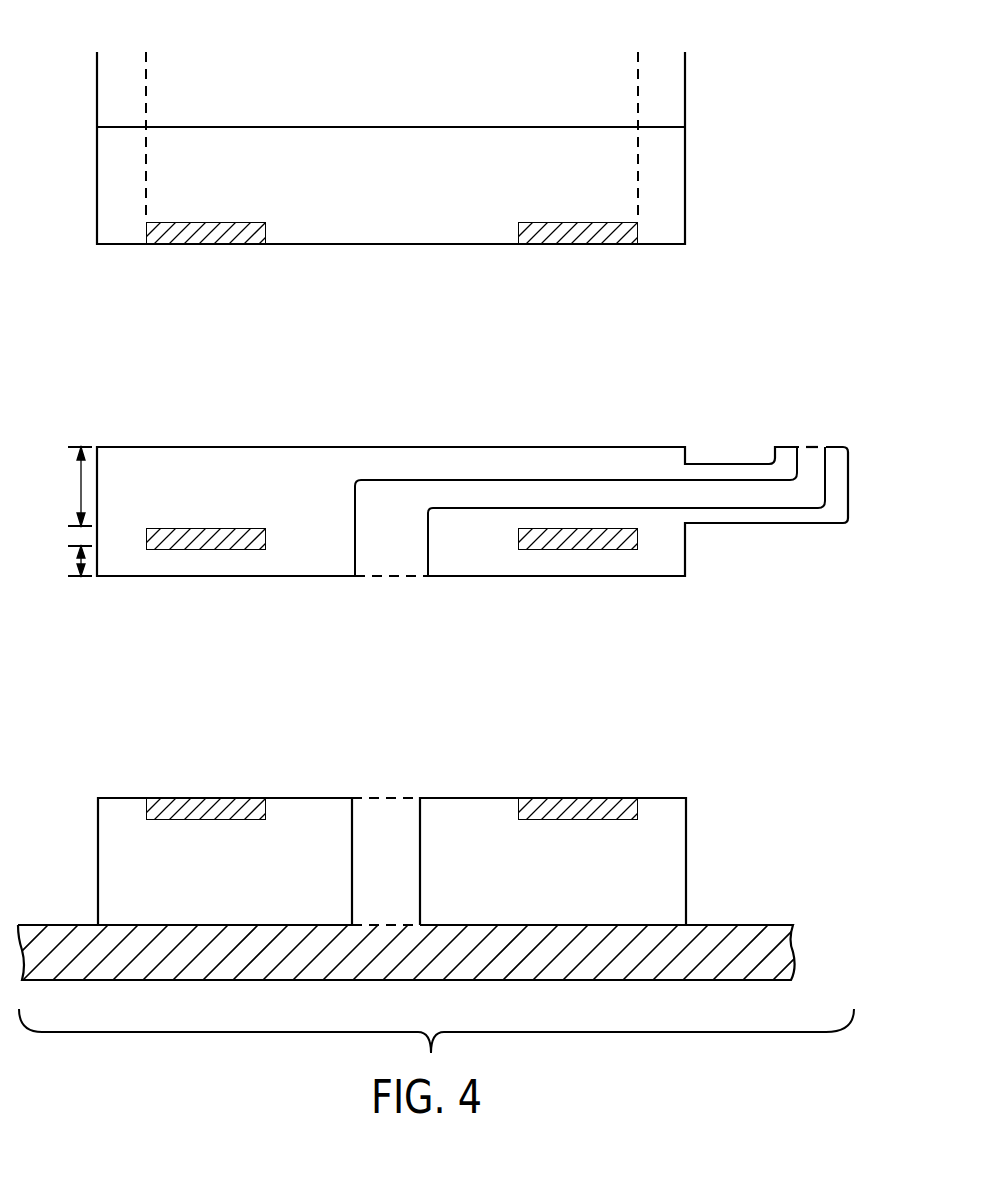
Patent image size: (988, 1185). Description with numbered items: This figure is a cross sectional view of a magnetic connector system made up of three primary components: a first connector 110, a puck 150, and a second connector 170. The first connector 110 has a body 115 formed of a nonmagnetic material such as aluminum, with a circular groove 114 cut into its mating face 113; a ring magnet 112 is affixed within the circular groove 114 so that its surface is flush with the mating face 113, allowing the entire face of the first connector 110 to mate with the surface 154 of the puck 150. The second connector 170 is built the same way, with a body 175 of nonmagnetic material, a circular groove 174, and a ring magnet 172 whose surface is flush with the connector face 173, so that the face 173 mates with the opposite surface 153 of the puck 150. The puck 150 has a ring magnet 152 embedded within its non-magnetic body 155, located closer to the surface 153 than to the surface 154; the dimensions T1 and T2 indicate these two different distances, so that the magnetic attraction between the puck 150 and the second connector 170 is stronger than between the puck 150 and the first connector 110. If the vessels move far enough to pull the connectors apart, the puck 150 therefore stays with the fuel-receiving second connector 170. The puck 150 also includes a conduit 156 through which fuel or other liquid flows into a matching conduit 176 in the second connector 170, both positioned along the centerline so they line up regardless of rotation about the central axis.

The first connector 110 is at (680, 188).
The ring magnet 112 is at (205, 228).
The mating face 113 is at (319, 246).
The circular groove 114 is at (160, 232).
The body 115 is at (392, 132).
The puck 150 is at (642, 450).
The ring magnet 152 is at (216, 527).
The surface 153 is at (137, 578).
The surface 154 is at (150, 446).
The non-magnetic body 155 is at (484, 450).
The conduit 156 is at (385, 578).
The second connector 170 is at (680, 823).
The ring magnet 172 is at (206, 797).
The connector face 173 is at (447, 796).
The circular groove 174 is at (618, 809).
The body 175 is at (680, 885).
The matching conduit 176 is at (400, 912).
The thickness T1 is at (68, 561).
The thickness T2 is at (68, 486).